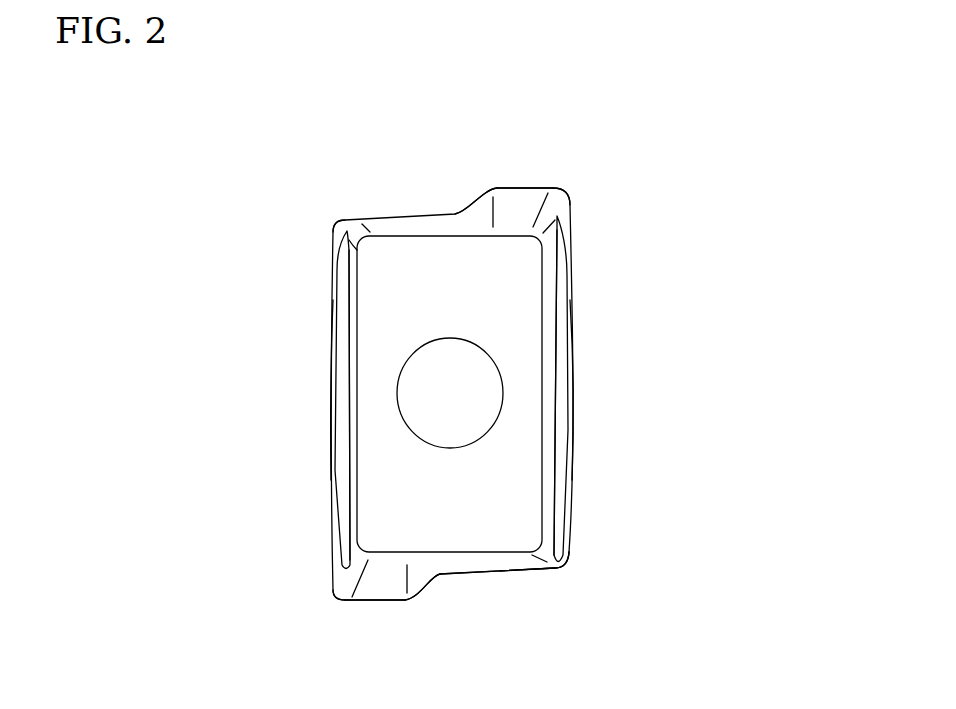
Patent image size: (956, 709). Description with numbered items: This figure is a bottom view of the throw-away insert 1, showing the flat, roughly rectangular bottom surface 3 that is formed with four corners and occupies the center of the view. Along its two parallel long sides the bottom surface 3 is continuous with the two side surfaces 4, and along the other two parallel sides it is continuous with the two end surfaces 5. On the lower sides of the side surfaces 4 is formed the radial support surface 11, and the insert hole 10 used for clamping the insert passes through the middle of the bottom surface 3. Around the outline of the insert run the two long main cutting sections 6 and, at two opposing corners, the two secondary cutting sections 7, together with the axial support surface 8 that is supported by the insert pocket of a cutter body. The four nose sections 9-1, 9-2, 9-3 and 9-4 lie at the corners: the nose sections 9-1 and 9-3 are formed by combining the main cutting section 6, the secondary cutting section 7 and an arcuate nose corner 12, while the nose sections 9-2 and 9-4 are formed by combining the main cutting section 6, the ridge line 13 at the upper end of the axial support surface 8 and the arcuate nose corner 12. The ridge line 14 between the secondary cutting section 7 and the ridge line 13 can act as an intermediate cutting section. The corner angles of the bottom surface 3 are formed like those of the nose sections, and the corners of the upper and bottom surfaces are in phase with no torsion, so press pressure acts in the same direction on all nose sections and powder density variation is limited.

The throw-away insert 1 is at (528, 162).
The bottom surface 3 is at (517, 323).
The side surface 4 is at (567, 240).
The end surface 5 is at (525, 200).
The main cutting section 6 is at (570, 452).
The secondary cutting section 7 is at (507, 186).
The axial support surface 8 is at (398, 228).
The nose section 9-1 is at (573, 195).
The nose section 9-2 is at (340, 220).
The nose section 9-3 is at (335, 598).
The nose section 9-4 is at (558, 568).
The insert hole 10 is at (399, 383).
The radial support surface 11 is at (550, 408).
The arcuate nose corner 12 is at (562, 558).
The ridge line 13 is at (530, 567).
The ridge line 14 is at (427, 587).